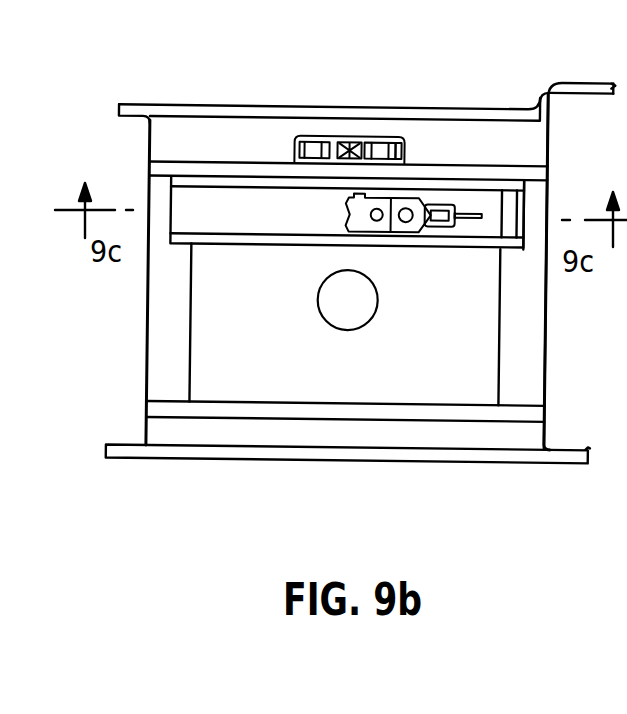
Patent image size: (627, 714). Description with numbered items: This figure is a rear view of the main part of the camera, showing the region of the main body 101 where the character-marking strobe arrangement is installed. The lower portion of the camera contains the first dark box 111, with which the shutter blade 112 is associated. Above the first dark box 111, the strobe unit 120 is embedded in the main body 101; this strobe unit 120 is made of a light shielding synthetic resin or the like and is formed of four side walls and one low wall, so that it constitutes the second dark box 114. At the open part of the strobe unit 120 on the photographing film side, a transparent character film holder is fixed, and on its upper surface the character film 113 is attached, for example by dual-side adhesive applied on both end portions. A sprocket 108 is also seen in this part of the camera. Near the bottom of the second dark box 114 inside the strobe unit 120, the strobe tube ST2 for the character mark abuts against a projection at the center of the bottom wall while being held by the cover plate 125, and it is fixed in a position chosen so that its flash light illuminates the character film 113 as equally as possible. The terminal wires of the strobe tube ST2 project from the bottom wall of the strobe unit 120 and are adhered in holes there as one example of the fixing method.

The main body 101 is at (278, 135).
The sprocket 108 is at (350, 140).
The first dark box 111 is at (276, 370).
The shutter blade 112 is at (360, 308).
The character film 113 is at (257, 212).
The second dark box 114 is at (489, 207).
The strobe unit 120 is at (251, 246).
The cover plate 125 is at (410, 200).
The strobe tube for a character mark ST2 is at (452, 222).